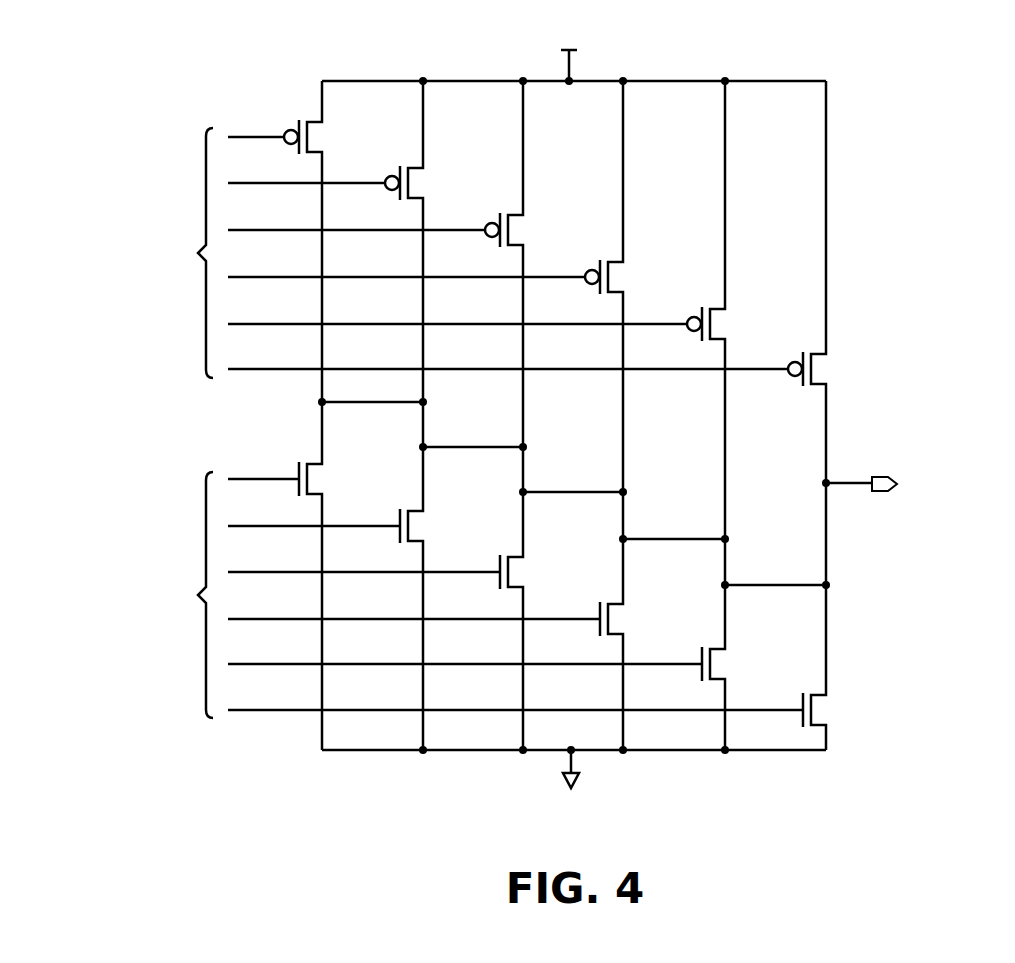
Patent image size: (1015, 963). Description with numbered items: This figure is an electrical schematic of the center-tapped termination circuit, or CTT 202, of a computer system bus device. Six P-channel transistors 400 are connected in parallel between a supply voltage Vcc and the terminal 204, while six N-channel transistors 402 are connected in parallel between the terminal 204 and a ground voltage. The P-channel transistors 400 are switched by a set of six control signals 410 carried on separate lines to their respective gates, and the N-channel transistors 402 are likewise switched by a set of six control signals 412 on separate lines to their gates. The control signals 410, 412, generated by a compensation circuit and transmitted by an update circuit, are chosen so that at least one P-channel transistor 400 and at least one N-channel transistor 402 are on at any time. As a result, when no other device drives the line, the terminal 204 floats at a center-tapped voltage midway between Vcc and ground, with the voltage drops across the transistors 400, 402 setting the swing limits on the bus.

The CTT 202 is at (893, 155).
The terminal 204 is at (883, 474).
The P-channel transistors 400 is at (597, 164).
The N-channel transistors 402 is at (597, 561).
The control signals 410 is at (464, 253).
The control signals 412 is at (471, 595).